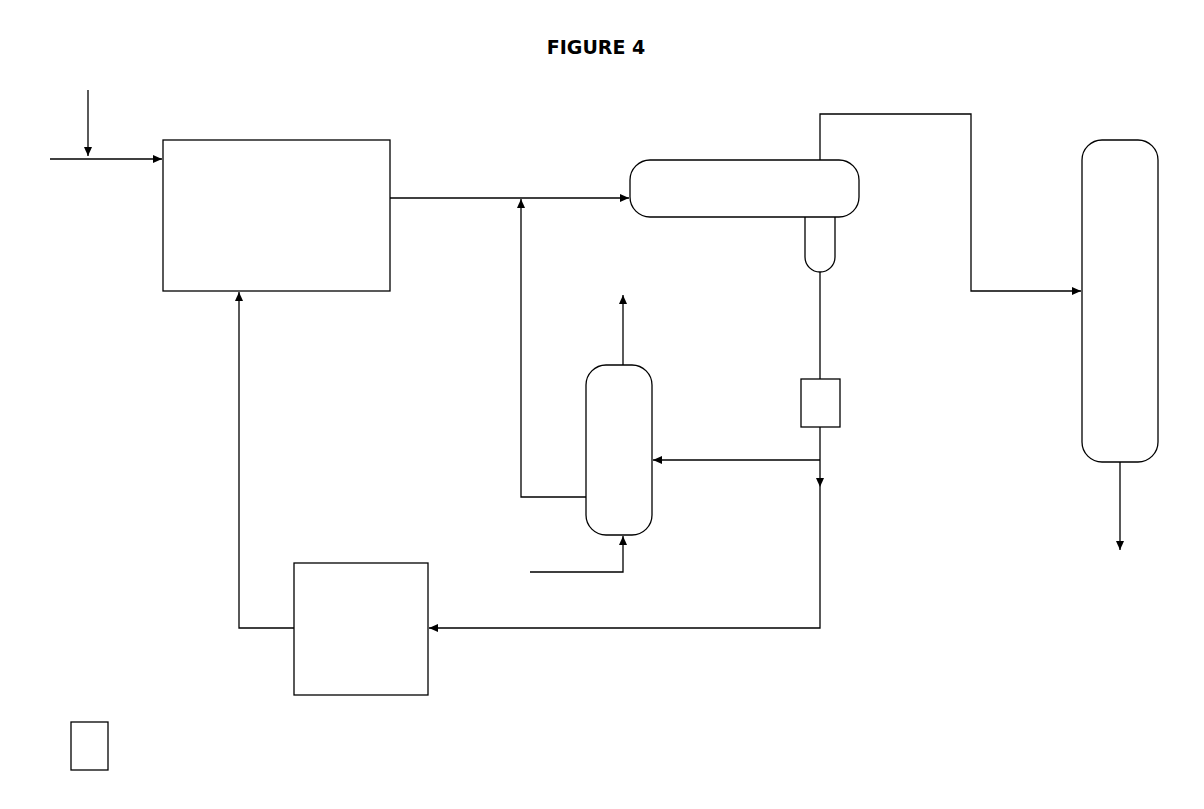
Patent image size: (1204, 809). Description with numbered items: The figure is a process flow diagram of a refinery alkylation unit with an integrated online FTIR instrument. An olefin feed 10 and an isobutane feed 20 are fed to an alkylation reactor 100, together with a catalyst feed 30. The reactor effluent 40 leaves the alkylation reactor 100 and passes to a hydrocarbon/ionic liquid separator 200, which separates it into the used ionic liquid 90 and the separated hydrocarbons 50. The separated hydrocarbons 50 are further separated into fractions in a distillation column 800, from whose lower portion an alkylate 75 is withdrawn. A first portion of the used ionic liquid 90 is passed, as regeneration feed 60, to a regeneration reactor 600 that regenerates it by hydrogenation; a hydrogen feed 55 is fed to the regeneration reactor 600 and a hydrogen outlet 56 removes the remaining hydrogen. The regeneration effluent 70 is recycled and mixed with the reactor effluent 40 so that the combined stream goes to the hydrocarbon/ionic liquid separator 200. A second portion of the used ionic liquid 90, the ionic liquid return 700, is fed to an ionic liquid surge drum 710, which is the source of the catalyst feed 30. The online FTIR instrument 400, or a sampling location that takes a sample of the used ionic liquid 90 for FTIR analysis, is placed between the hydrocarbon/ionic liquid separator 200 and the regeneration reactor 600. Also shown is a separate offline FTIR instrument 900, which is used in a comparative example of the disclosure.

The olefin feed 10 is at (69, 115).
The isobutane feed 20 is at (99, 175).
The catalyst feed 30 is at (267, 460).
The reactor effluent 40 is at (509, 186).
The separated hydrocarbons 50 is at (950, 202).
The hydrogen feed 55 is at (576, 554).
The hydrogen outlet 56 is at (642, 317).
The regeneration feed 60 is at (736, 449).
The regeneration effluent 70 is at (534, 348).
The alkylate 75 is at (1120, 520).
The used ionic liquid 90 is at (848, 325).
The alkylation reactor 100 is at (276, 215).
The hydrocarbon/ionic liquid separator 200 is at (744, 216).
The online FTIR instrument 400 is at (847, 433).
The regeneration reactor 600 is at (619, 450).
The ionic liquid return 700 is at (655, 557).
The ionic liquid surge drum 710 is at (361, 629).
The distillation column 800 is at (1120, 301).
The offline FTIR instrument 900 is at (120, 746).